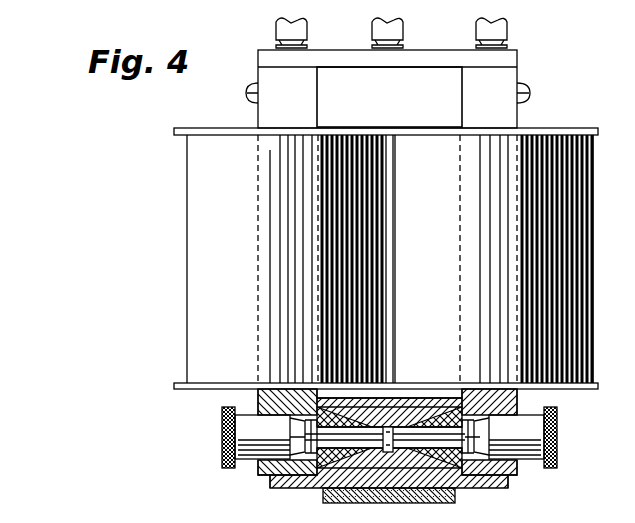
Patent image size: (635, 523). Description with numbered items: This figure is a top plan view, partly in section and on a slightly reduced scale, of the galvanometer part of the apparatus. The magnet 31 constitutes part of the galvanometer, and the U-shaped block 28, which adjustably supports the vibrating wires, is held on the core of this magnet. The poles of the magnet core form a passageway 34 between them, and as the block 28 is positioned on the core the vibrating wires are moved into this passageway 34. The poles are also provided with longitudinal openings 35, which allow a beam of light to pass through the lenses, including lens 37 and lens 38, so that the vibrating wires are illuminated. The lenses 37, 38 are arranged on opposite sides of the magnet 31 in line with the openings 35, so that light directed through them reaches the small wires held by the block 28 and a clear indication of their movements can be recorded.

The block 28 is at (490, 487).
The magnet 31 is at (582, 265).
The passageway 34 is at (396, 441).
The longitudinal openings 35 is at (348, 440).
The lens 37 is at (527, 430).
The lens 38 is at (248, 460).